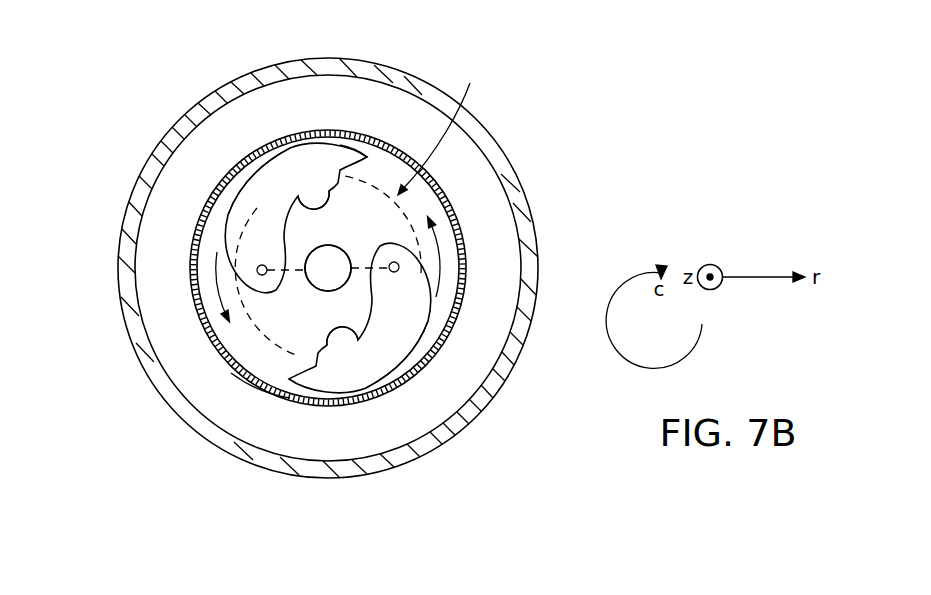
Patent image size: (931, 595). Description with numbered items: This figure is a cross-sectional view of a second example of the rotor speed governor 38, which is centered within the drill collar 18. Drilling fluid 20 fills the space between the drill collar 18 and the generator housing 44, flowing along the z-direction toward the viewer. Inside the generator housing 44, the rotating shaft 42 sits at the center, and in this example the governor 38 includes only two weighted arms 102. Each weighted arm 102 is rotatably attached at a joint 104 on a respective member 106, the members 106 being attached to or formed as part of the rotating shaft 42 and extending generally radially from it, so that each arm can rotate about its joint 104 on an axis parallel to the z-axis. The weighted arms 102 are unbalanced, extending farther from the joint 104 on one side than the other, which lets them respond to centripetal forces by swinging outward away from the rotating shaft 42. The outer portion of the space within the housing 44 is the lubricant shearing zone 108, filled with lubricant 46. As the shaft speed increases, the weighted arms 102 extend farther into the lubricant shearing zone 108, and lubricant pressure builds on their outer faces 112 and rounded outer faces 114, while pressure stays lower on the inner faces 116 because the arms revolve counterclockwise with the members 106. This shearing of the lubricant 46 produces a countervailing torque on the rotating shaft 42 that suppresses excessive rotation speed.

The drill collar 18 is at (297, 61).
The drilling fluid 20 is at (339, 113).
The rotor speed governor 38 is at (370, 162).
The rotating shaft 42 is at (440, 124).
The generator housing 44 is at (353, 130).
The lubricant 46 is at (256, 356).
The weighted arms 102 is at (256, 215).
The joint 104 is at (257, 270).
The member 106 is at (264, 266).
The lubricant shearing zone 108 is at (266, 372).
The outer face 112 is at (330, 246).
The outer face 114 is at (262, 200).
The inner face 116 is at (300, 207).